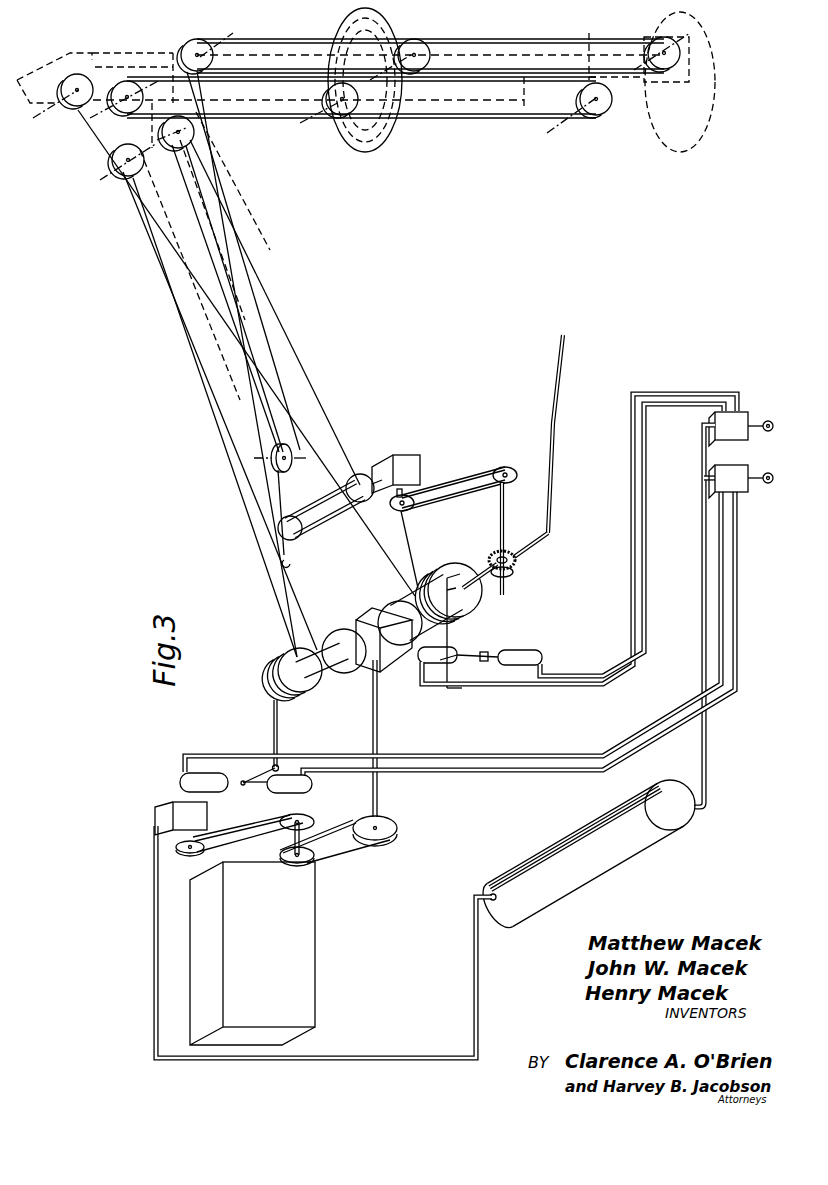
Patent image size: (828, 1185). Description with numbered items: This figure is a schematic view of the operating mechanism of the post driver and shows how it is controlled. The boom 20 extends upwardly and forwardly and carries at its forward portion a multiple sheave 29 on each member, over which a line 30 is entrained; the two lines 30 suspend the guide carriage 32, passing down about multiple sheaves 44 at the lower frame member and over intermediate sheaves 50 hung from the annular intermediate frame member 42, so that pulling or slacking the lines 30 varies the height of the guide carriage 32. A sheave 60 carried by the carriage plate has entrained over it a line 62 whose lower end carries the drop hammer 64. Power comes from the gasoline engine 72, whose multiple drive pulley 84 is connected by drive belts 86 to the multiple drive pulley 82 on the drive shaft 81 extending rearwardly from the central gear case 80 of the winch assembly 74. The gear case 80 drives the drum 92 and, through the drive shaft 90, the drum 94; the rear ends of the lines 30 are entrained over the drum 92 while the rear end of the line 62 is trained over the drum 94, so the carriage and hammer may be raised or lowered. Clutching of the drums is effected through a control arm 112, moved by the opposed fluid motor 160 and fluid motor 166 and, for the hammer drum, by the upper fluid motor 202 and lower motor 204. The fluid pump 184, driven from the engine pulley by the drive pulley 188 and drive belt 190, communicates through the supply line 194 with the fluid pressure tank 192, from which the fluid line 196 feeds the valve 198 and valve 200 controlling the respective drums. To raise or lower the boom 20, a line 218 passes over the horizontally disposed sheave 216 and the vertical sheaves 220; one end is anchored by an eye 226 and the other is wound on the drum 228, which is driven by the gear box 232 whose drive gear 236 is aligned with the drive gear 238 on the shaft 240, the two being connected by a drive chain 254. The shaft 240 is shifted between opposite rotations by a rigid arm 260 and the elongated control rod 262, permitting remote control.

The boom 20 is at (250, 194).
The multiple sheave 29 is at (127, 95).
The line 30 is at (238, 290).
The guide carriage 32 is at (476, 33).
The annular intermediate frame member 42 is at (388, 28).
The multiple sheave 44 is at (660, 45).
The intermediate sheave 50 is at (340, 104).
The sheave 60 is at (80, 108).
The line 62 is at (302, 432).
The drop hammer 64 is at (650, 125).
The gasoline engine 72 is at (300, 940).
The winch assembly 74 is at (354, 617).
The central gear case 80 is at (378, 664).
The drive shaft 81 is at (378, 780).
The multiple drive pulley 82 is at (382, 836).
The multiple drive pulley 84 is at (305, 818).
The drive belt 86 is at (335, 830).
The drive shaft 90 is at (478, 570).
The drum 92 is at (300, 688).
The drum 94 is at (392, 604).
The control arm 112 is at (272, 765).
The fluid motor 160 is at (200, 782).
The fluid motor 166 is at (285, 792).
The fluid pump 184 is at (165, 816).
The drive pulley 188 is at (186, 853).
The drive belt 190 is at (238, 827).
The fluid pressure tank 192 is at (678, 815).
The supply line 194 is at (153, 945).
The fluid line 196 is at (707, 727).
The valve 198 is at (735, 488).
The valve 200 is at (742, 420).
The upper fluid motor 202 is at (450, 650).
The lower motor 204 is at (515, 650).
The horizontally disposed sheave 216 is at (278, 466).
The line 218 is at (280, 333).
The vertical sheave 220 is at (122, 168).
The eye 226 is at (275, 567).
The drum 228 is at (325, 516).
The gear box 232 is at (405, 462).
The drive gear 236 is at (412, 560).
The drive gear 238 is at (510, 468).
The shaft 240 is at (500, 535).
The drive chain 254 is at (460, 480).
The rigid arm 260 is at (538, 548).
The control rod 262 is at (553, 423).